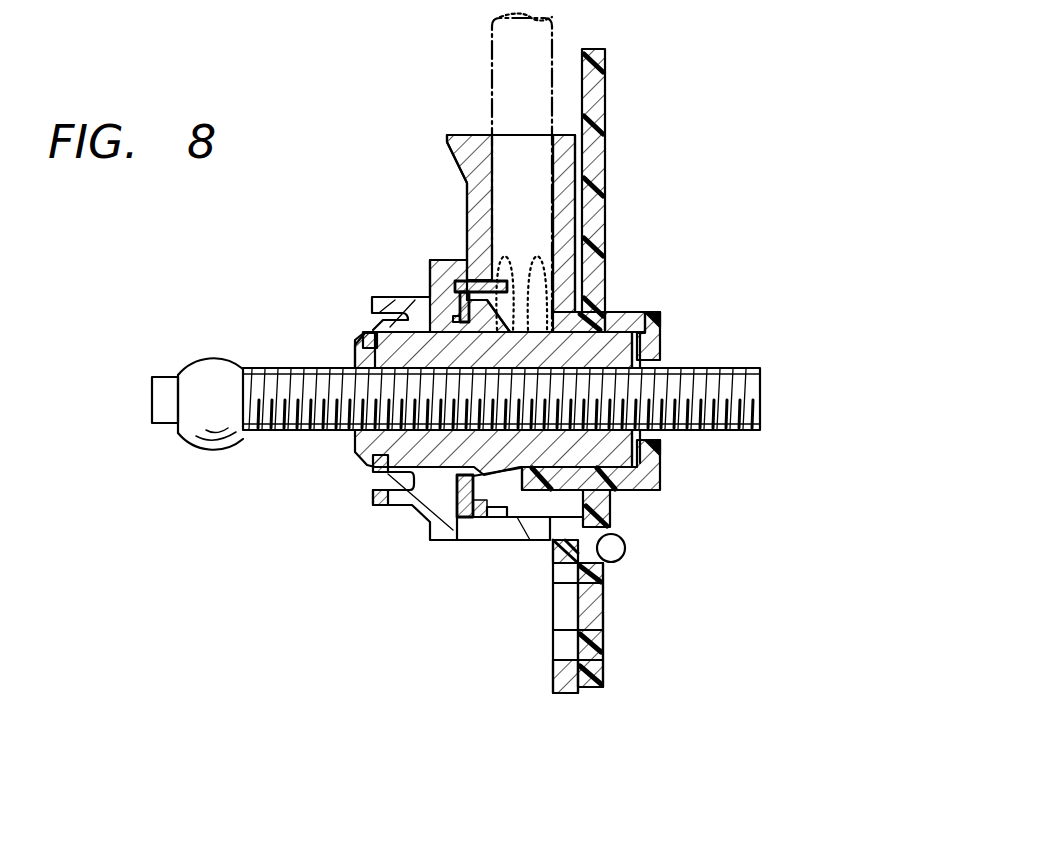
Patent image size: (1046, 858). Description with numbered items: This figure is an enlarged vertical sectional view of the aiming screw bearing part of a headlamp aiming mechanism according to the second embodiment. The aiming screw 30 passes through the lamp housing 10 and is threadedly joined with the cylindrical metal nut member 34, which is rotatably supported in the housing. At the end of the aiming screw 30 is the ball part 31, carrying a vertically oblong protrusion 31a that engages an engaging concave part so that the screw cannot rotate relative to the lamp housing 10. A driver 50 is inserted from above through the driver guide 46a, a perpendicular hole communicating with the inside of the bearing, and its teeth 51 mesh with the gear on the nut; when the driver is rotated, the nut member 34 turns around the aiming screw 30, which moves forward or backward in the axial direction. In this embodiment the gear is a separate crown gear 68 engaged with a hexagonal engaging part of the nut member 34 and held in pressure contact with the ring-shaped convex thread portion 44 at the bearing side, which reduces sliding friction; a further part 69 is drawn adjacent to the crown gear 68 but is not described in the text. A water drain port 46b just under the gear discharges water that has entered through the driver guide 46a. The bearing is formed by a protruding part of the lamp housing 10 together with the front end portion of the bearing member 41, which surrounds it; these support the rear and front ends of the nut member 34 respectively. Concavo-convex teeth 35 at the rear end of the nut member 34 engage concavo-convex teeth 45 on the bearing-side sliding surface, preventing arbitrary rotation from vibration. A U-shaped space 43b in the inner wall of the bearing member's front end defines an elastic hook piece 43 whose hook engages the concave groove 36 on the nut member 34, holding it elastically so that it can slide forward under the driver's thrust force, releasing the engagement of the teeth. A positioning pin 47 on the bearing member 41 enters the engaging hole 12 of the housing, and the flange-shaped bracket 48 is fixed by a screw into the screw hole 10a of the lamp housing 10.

The lamp housing 10 is at (607, 145).
The screw hole 10a is at (597, 628).
The engaging hole 12 is at (623, 560).
The aiming screw 30 is at (303, 437).
The ball part 31 is at (212, 437).
The protrusion 31a is at (160, 413).
The nut member 34 is at (598, 322).
The concavo-convex teeth 35 is at (640, 352).
The concave groove 36 is at (357, 353).
The bearing member 41 is at (373, 295).
The elastic hook piece 43 is at (380, 474).
The space 43b is at (385, 508).
The convex thread portion 44 is at (452, 500).
The concavo-convex teeth 45 is at (642, 312).
The driver guide 46a is at (455, 195).
The water drain port 46b is at (507, 540).
The positioning pin 47 is at (617, 548).
The flange-shaped bracket 48 is at (563, 660).
The driver 50 is at (557, 98).
The teeth 51 is at (537, 297).
The crown gear 68 is at (457, 290).
The sleeve 69 is at (478, 253).